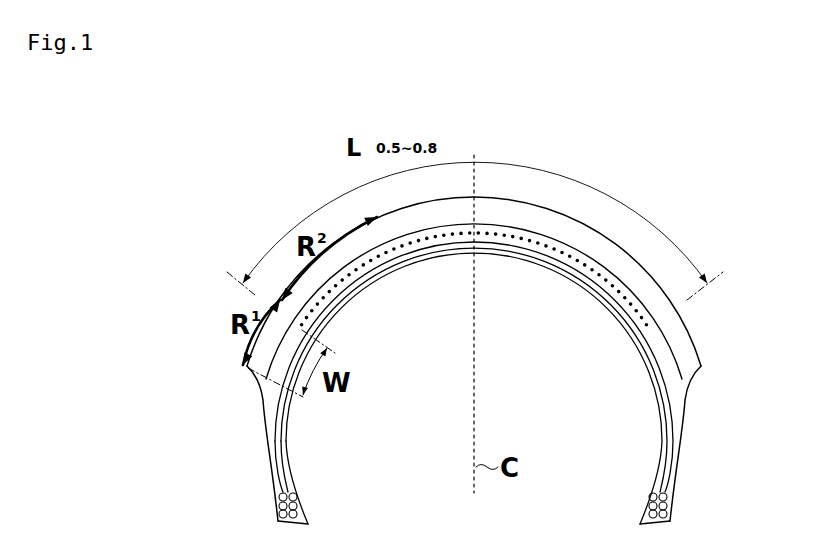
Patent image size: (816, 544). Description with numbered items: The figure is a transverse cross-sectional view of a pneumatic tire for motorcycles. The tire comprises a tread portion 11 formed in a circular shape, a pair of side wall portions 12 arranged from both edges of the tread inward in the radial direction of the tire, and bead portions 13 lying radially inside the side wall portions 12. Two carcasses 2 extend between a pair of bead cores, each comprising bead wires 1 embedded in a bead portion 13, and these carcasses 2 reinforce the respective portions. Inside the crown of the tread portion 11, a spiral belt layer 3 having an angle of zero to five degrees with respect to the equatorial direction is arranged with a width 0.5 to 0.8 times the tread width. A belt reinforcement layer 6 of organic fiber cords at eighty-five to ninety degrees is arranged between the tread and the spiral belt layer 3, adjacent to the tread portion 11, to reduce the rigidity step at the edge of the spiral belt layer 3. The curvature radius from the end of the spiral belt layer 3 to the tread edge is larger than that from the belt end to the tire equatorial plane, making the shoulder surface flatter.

The bead wire 1 is at (670, 498).
The carcass 2 is at (668, 425).
The spiral belt layer 3 is at (603, 280).
The belt reinforcement layer 6 is at (668, 347).
The tread portion 11 is at (555, 207).
The side wall portion 12 is at (260, 412).
The bead portion 13 is at (277, 507).